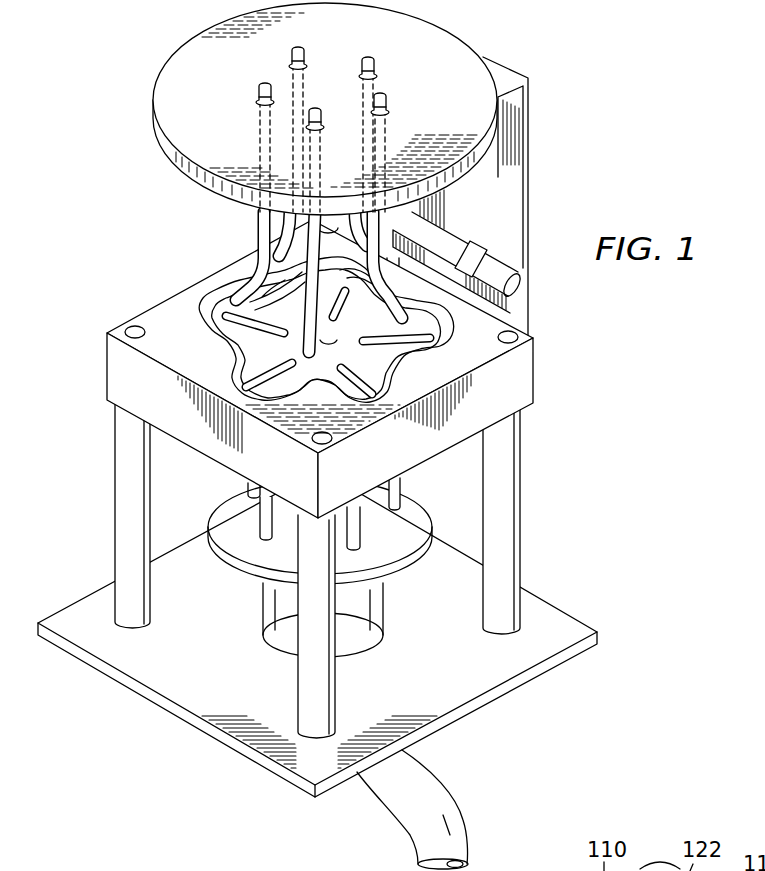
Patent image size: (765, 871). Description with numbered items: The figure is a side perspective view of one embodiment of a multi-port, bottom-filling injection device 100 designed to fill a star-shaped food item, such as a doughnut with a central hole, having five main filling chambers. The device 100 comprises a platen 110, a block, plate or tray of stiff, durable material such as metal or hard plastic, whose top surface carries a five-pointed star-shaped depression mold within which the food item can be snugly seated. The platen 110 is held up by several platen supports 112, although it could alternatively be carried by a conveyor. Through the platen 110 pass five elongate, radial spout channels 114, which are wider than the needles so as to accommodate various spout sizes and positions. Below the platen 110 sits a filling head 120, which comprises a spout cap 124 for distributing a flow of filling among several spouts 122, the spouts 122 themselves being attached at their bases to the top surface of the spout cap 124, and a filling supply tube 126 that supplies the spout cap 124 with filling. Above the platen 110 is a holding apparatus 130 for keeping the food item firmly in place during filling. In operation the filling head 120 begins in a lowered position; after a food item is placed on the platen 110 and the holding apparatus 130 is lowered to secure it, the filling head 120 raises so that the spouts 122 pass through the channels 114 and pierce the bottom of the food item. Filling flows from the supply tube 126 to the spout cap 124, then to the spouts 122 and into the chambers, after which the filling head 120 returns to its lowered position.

The multi-port, bottom-filling injection device 100 is at (103, 204).
The platen 110 is at (527, 372).
The platen supports 112 is at (115, 487).
The spout channels 114 is at (215, 355).
The filling head 120 is at (236, 600).
The spouts 122 is at (248, 487).
The spout cap 124 is at (395, 545).
The filling supply tube 126 is at (448, 788).
The holding apparatus 130 is at (180, 68).